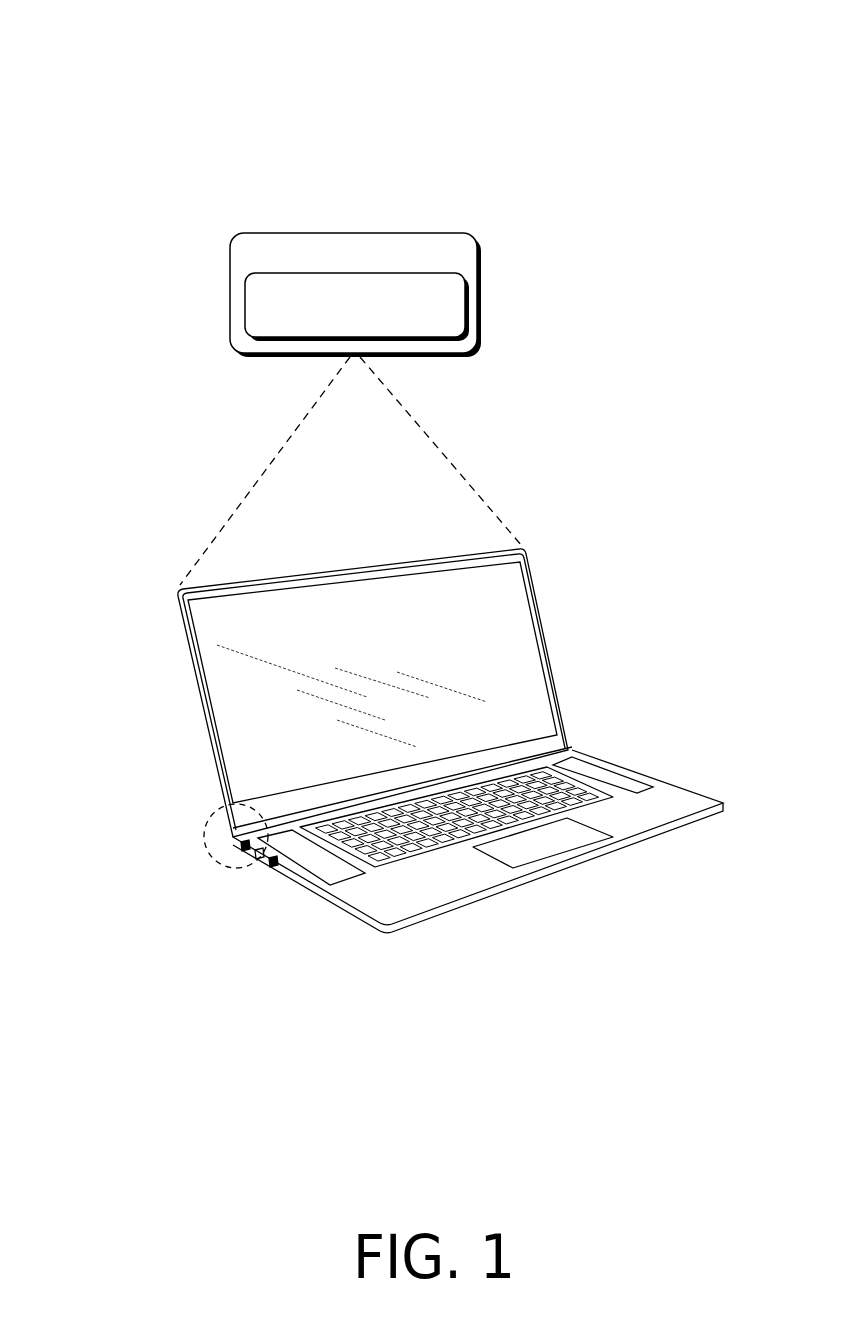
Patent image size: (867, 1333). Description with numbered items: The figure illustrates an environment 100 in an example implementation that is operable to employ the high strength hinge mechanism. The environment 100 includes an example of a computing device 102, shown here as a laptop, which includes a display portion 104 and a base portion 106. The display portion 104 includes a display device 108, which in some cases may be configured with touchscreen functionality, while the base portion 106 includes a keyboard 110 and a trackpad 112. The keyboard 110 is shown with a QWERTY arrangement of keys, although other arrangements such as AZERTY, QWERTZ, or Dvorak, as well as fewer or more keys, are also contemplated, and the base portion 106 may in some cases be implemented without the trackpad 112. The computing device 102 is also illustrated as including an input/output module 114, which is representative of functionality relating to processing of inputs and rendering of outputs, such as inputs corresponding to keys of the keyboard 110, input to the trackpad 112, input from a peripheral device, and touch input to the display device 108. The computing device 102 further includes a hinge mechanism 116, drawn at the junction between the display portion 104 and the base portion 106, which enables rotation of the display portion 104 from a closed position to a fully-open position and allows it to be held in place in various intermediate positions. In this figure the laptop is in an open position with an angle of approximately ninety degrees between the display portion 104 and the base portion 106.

The environment 100 is at (127, 60).
The computing device 102 is at (423, 594).
The display portion 104 is at (185, 645).
The base portion 106 is at (658, 805).
The display device 108 is at (508, 647).
The keyboard 110 is at (533, 790).
The trackpad 112 is at (552, 838).
The input/output module 114 is at (357, 307).
The hinge mechanism 116 is at (237, 867).